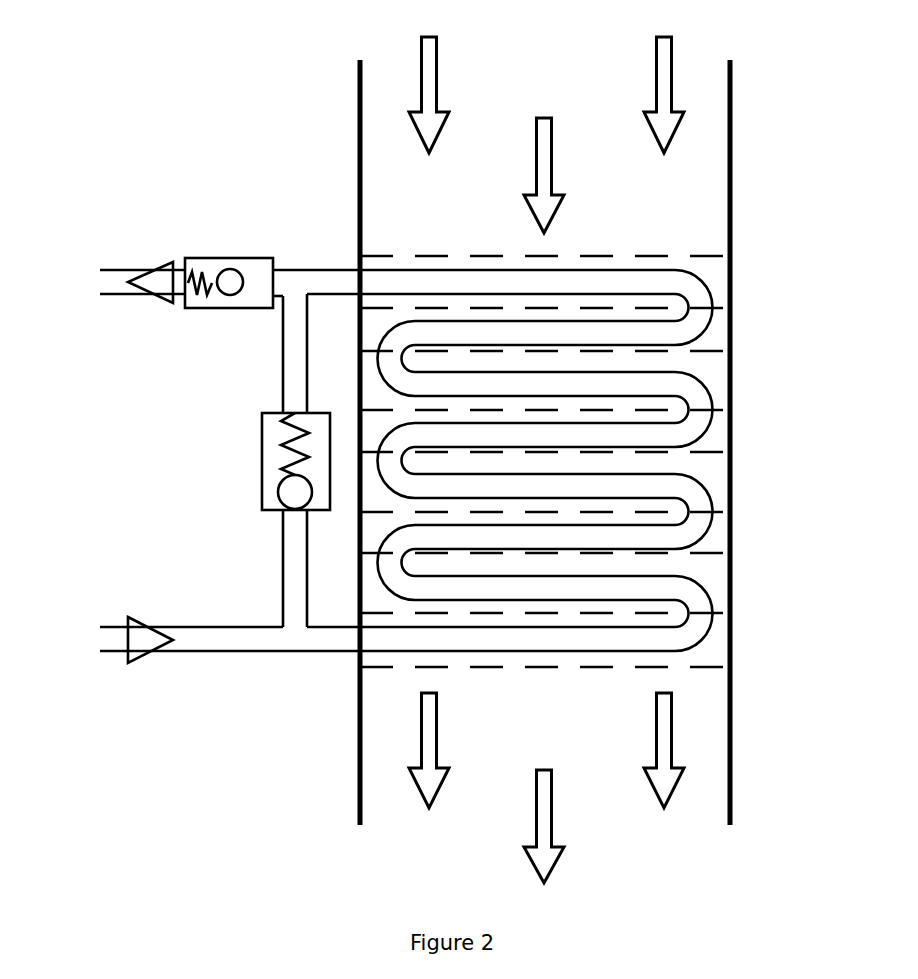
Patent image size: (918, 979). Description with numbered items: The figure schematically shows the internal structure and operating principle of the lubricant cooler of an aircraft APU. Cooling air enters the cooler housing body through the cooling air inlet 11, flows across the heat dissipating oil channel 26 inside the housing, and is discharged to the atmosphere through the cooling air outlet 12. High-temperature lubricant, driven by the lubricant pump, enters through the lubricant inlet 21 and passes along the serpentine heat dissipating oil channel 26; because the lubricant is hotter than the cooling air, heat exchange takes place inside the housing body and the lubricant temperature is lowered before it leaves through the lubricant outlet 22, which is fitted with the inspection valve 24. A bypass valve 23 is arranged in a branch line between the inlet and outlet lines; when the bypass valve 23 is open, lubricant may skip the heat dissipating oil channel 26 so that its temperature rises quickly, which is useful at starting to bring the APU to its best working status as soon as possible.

The cooling air inlet 11 is at (546, 135).
The cooling air outlet 12 is at (546, 788).
The lubricant inlet 21 is at (166, 640).
The lubricant outlet 22 is at (117, 282).
The bypass valve 23 is at (277, 486).
The inspection valve 24 is at (247, 257).
The heat dissipating oil channel 26 is at (735, 476).